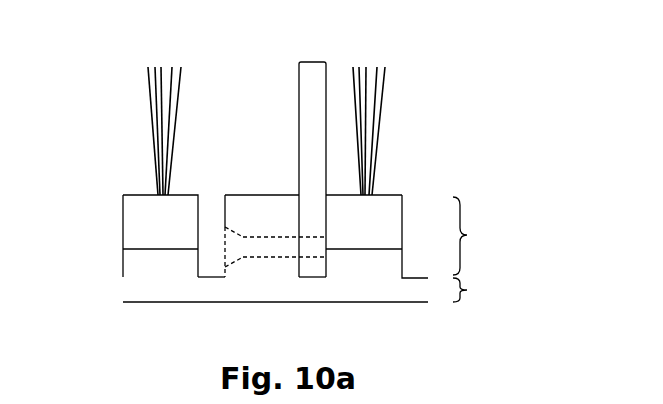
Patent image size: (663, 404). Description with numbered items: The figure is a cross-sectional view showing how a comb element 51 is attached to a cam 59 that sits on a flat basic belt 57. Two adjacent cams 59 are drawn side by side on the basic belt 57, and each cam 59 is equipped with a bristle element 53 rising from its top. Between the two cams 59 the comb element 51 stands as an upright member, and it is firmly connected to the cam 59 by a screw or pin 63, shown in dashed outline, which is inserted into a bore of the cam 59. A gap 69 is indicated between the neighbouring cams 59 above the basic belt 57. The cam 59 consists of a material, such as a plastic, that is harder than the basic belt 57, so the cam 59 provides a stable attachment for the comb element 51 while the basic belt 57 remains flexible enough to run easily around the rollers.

The comb element 51 is at (296, 88).
The bristle element 53 is at (146, 127).
The basic belt 57 is at (373, 284).
The cam 59 is at (316, 236).
The screw or pin 63 is at (249, 229).
The gap / trench 69 is at (208, 279).